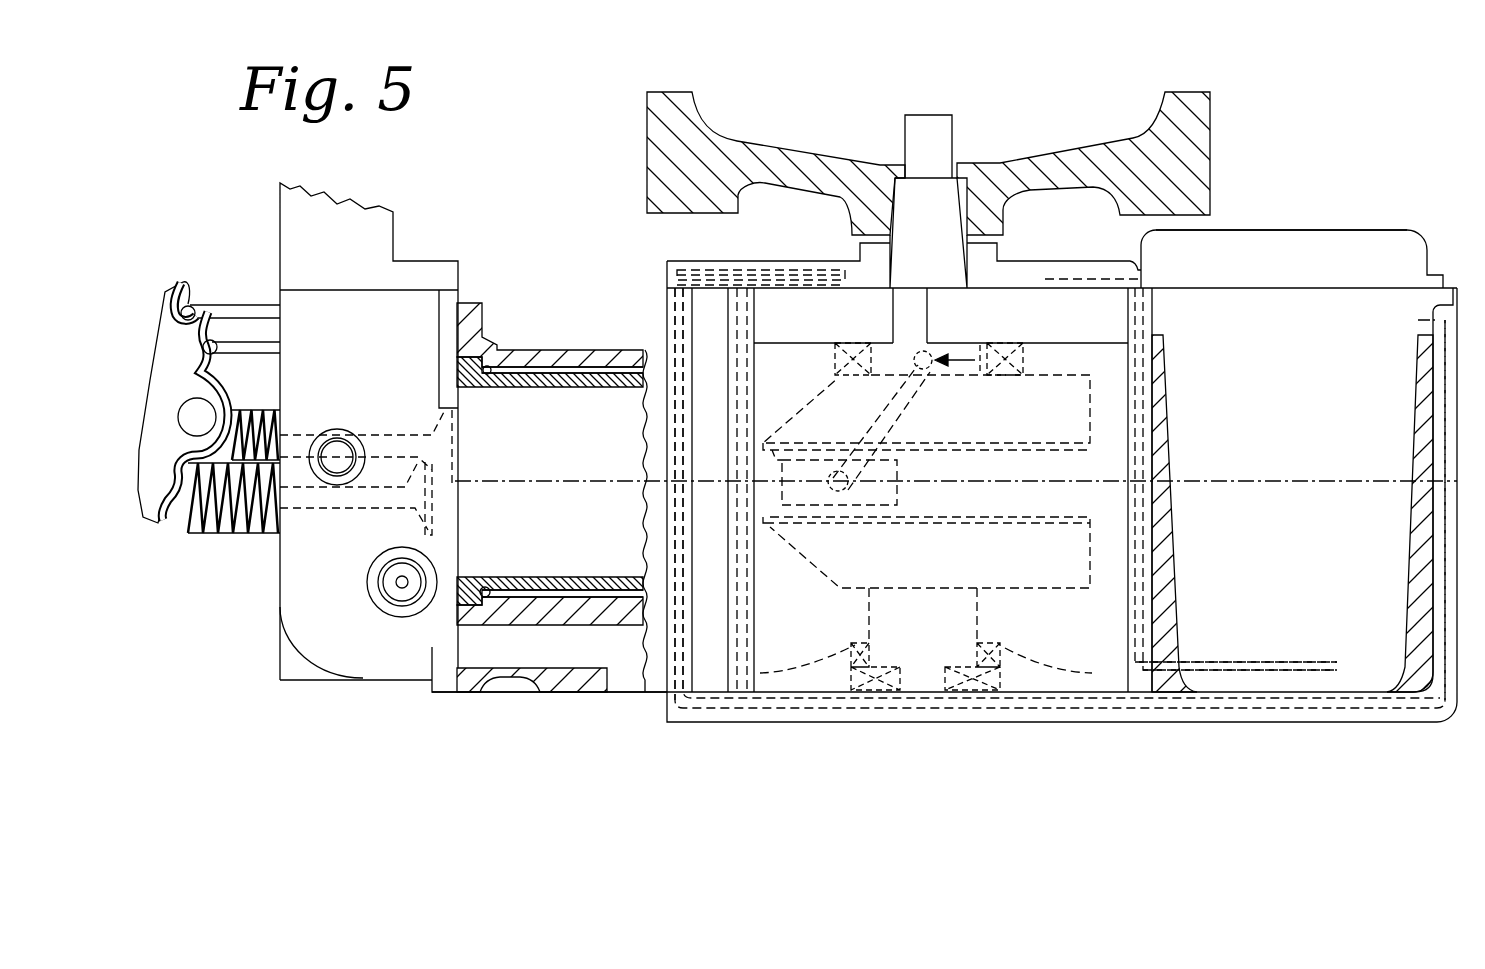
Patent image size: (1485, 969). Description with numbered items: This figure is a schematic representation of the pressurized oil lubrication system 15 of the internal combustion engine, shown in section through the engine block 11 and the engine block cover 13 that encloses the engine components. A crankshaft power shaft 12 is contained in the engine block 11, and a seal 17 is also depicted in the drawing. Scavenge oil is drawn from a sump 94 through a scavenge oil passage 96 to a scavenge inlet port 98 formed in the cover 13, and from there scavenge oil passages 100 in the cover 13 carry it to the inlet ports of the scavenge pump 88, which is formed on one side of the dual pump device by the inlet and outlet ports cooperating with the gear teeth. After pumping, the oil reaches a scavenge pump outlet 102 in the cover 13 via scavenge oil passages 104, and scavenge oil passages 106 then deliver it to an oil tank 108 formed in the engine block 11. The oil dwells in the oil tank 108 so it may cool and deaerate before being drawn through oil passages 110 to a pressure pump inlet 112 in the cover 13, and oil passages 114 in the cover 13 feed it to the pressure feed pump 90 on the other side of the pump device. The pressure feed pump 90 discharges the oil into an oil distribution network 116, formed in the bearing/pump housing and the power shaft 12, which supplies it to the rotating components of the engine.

The engine block 11 is at (855, 724).
The power shaft 12 is at (990, 426).
The engine block cover 13 is at (1430, 262).
The pressurized oil lubrication system 15 is at (1300, 218).
The O-ring seal 17 is at (474, 608).
The scavenge pump 88 is at (862, 336).
The pressure feed pump 90 is at (1045, 336).
The sump 94 is at (784, 657).
The scavenge oil passage 96 is at (752, 542).
The scavenge inlet port 98 is at (740, 280).
The scavenge oil passages 100 is at (778, 280).
The scavenge pump outlet 102 is at (672, 279).
The scavenge oil passages 104 is at (693, 270).
The scavenge oil passages 106 is at (676, 520).
The oil tank 108 is at (1318, 426).
The oil passages 110 is at (1128, 472).
The pressure pump inlet 112 is at (1140, 283).
The oil passages 114 is at (1103, 279).
The oil distribution network 116 is at (978, 350).